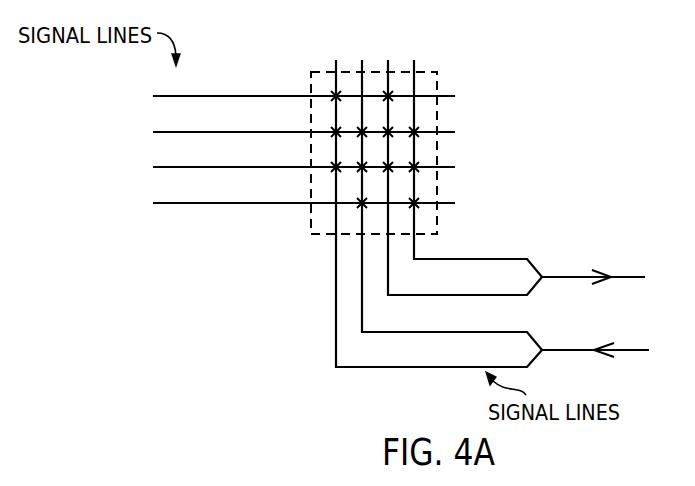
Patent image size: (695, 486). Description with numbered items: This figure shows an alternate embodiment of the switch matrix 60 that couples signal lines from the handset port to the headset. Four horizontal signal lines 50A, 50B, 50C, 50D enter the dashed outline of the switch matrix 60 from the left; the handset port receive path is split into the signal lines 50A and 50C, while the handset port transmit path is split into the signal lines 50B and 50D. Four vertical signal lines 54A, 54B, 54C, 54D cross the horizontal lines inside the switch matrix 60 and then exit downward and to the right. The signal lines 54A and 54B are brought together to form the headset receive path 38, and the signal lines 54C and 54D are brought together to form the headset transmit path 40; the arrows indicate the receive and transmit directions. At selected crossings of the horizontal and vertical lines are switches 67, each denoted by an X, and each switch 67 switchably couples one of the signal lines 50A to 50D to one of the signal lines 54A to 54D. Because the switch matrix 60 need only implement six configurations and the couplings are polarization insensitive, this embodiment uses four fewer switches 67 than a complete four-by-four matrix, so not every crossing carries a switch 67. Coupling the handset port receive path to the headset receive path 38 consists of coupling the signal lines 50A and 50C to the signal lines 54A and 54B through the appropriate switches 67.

The signal line 50A is at (304, 84).
The signal line 50B is at (304, 120).
The signal line 50C is at (304, 155).
The signal line 50D is at (304, 191).
The signal line 54A is at (478, 168).
The signal line 54B is at (465, 177).
The signal line 54C is at (452, 205).
The signal line 54D is at (439, 213).
The switch matrix 60 is at (452, 70).
The switch 67 is at (419, 198).
The headset receive path 38 is at (593, 258).
The headset transmit path 40 is at (595, 332).